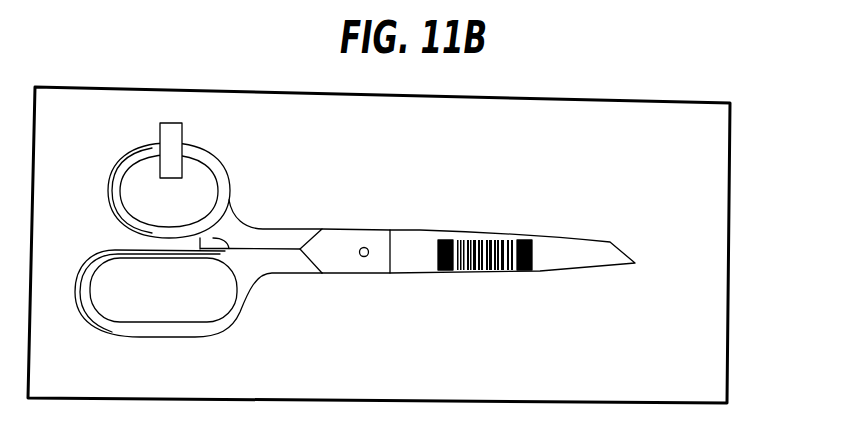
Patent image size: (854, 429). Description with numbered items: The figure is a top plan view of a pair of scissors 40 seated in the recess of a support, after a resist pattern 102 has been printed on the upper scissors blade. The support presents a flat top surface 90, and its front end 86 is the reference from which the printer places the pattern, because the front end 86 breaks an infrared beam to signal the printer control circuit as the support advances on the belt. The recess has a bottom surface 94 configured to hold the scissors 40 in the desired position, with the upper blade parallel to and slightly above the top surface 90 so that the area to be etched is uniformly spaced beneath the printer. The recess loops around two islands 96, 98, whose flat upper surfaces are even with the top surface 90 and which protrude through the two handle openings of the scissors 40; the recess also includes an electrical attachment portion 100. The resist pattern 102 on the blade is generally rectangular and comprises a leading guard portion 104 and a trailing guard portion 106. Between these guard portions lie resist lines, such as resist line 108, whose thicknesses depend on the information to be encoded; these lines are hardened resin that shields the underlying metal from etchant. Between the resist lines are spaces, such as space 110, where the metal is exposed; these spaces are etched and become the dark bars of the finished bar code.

The front end 86 is at (730, 227).
The top surface 90 is at (622, 367).
The island 98 is at (163, 207).
The electrical attachment portion 100 is at (177, 133).
The bottom surface 94 is at (218, 239).
The island 96 is at (151, 293).
The scissors 40 is at (336, 262).
The resist pattern 102 is at (510, 223).
The trailing guard portion 106 is at (440, 256).
The resist line 108 is at (467, 268).
The space 110 is at (503, 266).
The leading guard portion 104 is at (533, 256).